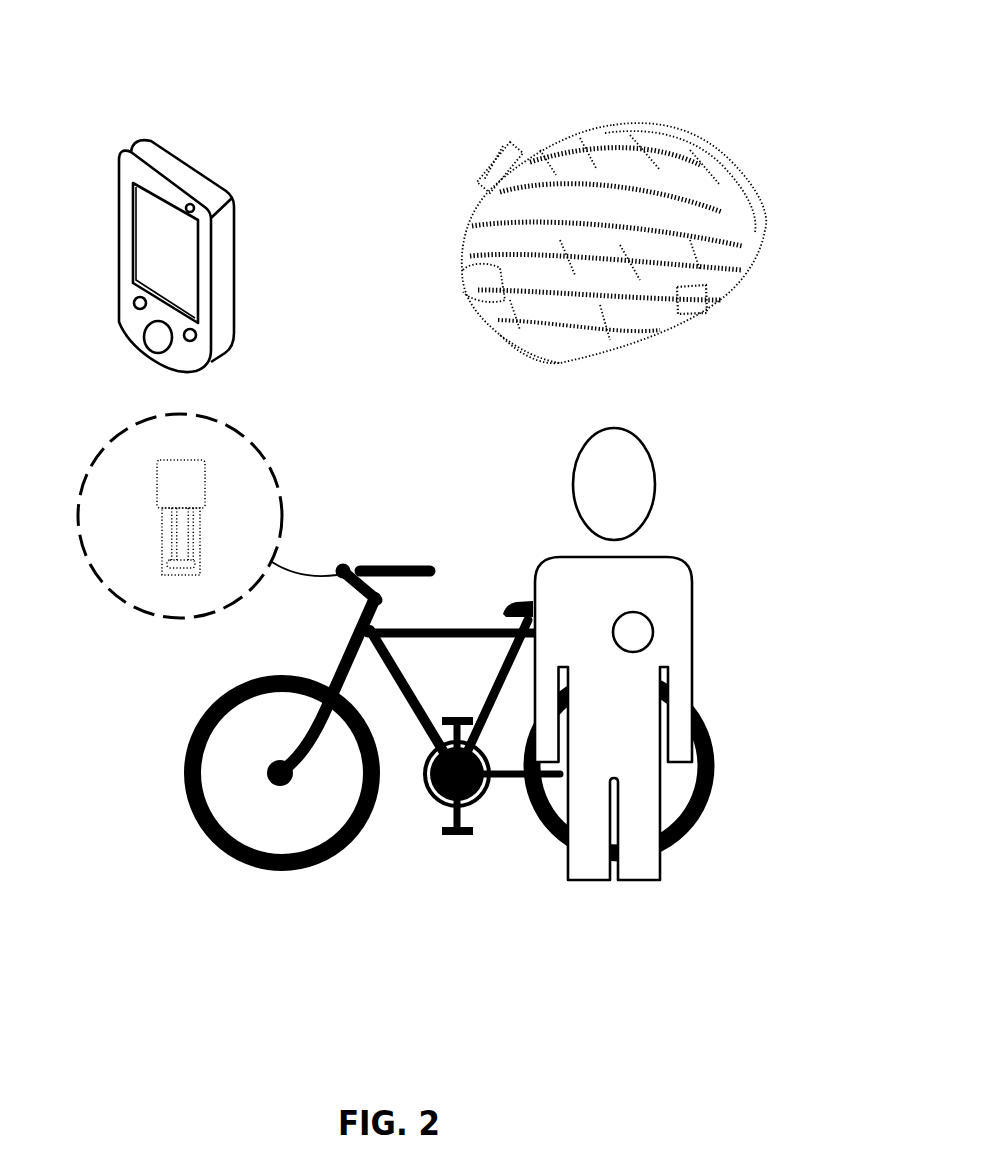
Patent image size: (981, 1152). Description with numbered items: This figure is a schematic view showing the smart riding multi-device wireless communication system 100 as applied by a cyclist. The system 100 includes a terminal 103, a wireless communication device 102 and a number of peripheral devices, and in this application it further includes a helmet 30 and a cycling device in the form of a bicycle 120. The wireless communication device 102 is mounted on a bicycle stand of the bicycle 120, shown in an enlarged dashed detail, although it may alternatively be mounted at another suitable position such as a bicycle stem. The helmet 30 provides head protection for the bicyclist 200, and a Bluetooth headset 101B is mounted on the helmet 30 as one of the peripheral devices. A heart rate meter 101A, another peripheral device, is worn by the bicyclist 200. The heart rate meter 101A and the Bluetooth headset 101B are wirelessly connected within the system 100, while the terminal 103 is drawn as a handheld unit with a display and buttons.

The smart riding multi-device wireless communication system 100 is at (437, 44).
The terminal 103 is at (193, 178).
The Bluetooth headset 101B is at (478, 187).
The helmet 30 is at (656, 289).
The wireless communication device 102 is at (167, 550).
The bicycle 120 is at (425, 628).
The heart rate meter 101A is at (627, 630).
The bicyclist 200 is at (617, 656).